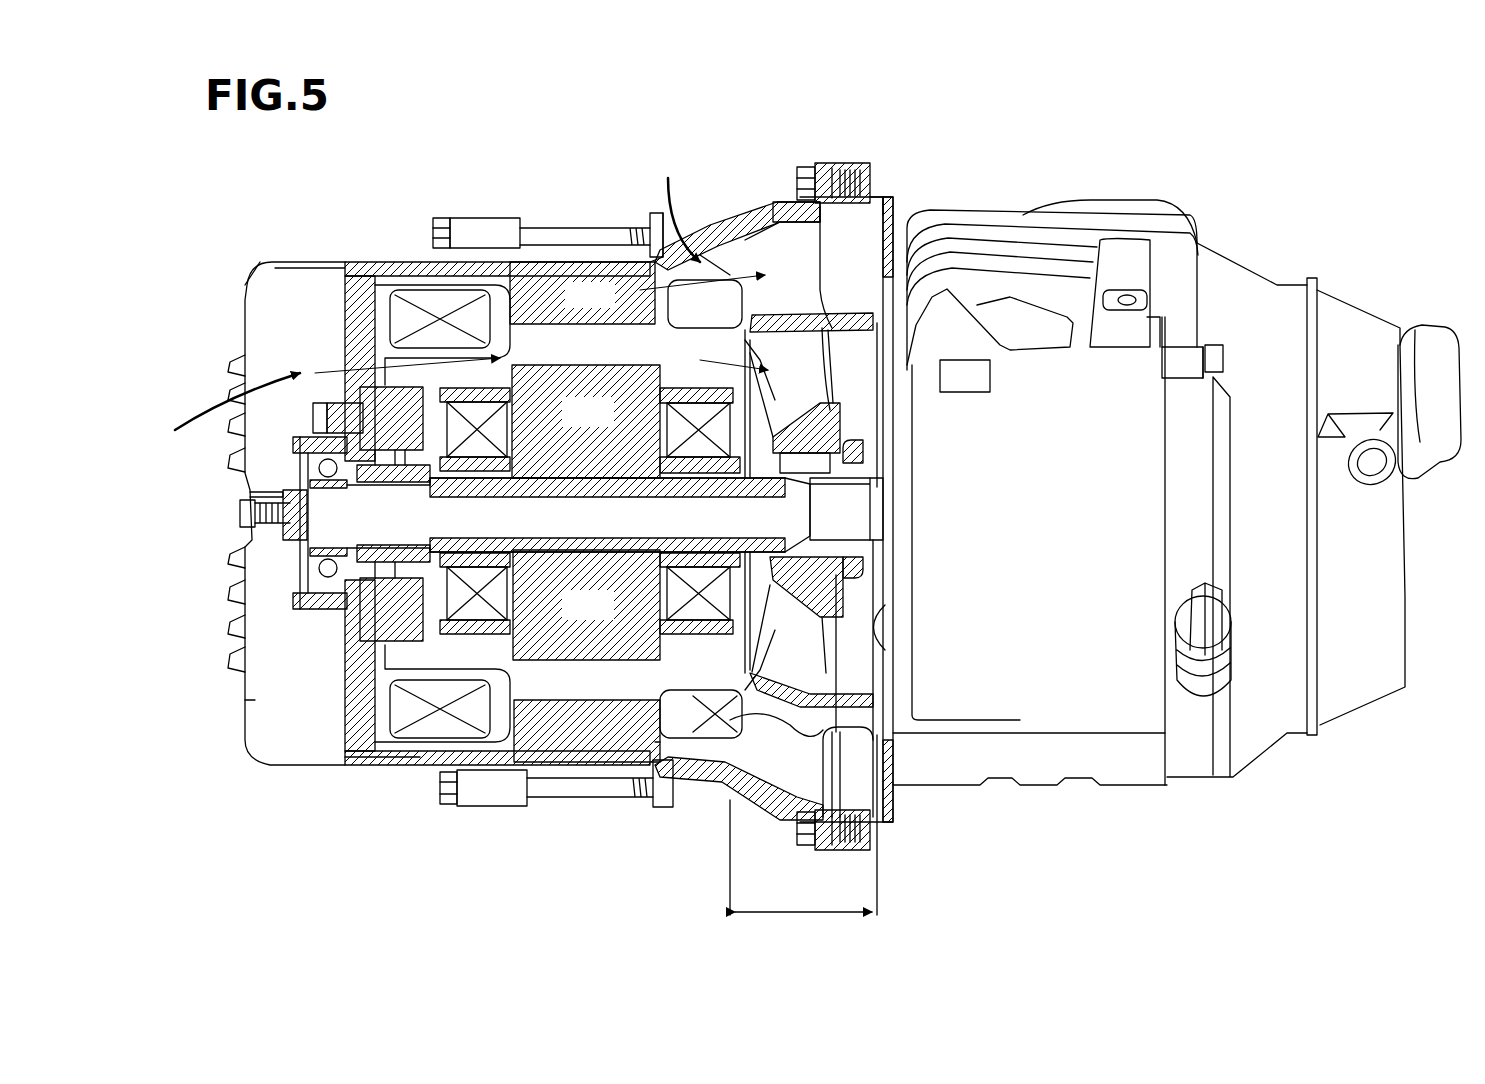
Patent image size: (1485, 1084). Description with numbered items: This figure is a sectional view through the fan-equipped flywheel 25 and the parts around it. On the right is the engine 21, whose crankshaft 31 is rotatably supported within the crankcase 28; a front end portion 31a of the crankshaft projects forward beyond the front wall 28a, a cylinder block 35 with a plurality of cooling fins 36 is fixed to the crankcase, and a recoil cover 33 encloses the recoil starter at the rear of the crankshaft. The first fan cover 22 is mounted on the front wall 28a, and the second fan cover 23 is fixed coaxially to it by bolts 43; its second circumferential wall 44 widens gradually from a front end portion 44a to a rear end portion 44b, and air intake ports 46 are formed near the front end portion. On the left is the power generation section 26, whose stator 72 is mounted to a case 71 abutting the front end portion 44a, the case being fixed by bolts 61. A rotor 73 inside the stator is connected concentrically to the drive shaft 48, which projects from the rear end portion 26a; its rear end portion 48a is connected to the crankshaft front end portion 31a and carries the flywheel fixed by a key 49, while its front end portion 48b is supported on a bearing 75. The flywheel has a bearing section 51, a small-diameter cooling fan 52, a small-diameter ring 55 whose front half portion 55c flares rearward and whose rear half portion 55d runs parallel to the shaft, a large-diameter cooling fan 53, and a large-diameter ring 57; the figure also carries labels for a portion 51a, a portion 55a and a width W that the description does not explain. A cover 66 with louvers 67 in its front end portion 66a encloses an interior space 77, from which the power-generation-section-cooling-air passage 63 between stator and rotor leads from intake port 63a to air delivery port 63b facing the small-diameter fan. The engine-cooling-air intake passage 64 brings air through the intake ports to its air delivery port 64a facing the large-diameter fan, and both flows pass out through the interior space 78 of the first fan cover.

The engine 21 is at (1215, 240).
The first fan cover 22 is at (892, 200).
The second fan cover 23 is at (718, 205).
The fan-equipped flywheel 25 is at (770, 205).
The power generation section 26 is at (395, 262).
The rear end portion 26a is at (660, 742).
The crankcase 28 is at (1133, 708).
The front wall 28a is at (890, 650).
The crankshaft 31 is at (885, 520).
The front end portion 31a is at (848, 500).
The recoil cover 33 is at (1345, 330).
The cylinder block 35 is at (1105, 203).
The cooling fins 36 is at (1005, 240).
The bolts 43 is at (855, 170).
The second circumferential wall 44 is at (742, 215).
The front end portion 44a is at (660, 240).
The rear end portion 44b is at (785, 200).
The air intake ports 46 is at (758, 842).
The drive shaft 48 is at (598, 540).
The rear end portion 48a is at (830, 560).
The front end portion 48b is at (318, 470).
The key 49 is at (850, 470).
The bearing section 51 is at (858, 330).
The fan hub flange 51a is at (802, 590).
The small-diameter cooling fan 52 is at (750, 395).
The large-diameter cooling fan 53 is at (880, 195).
The small-diameter ring 55 is at (822, 340).
The fan blade inner portion 55a is at (750, 372).
The front half portion 55c is at (712, 785).
The rear half portion 55d is at (836, 817).
The large-diameter ring 57 is at (828, 175).
The bolts 61 is at (548, 228).
The power-generation-section-cooling-air passage 63 is at (510, 290).
The intake port 63a is at (398, 440).
The air delivery port 63b is at (756, 491).
The engine-cooling-air intake passage 64 is at (690, 270).
The air delivery port 64a is at (701, 509).
The cover 66 is at (266, 262).
The front end portion 66a is at (246, 700).
The louvers 67 is at (232, 376).
The case 71 is at (398, 765).
The stator 72 is at (578, 262).
The rotor 73 is at (460, 806).
The bearing 75 is at (300, 422).
The interior space 77 is at (310, 343).
The interior space 78 is at (862, 768).
The fan case width W is at (803, 843).